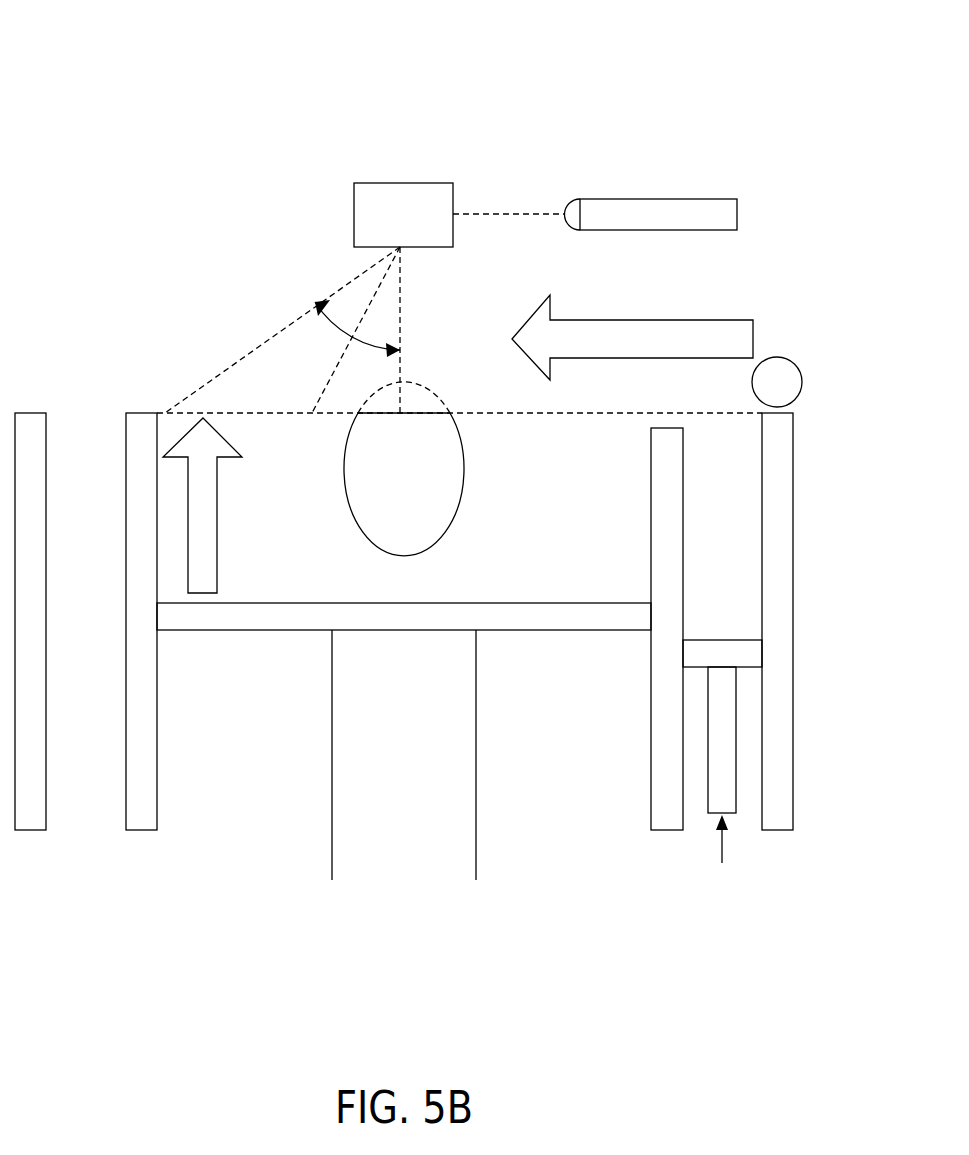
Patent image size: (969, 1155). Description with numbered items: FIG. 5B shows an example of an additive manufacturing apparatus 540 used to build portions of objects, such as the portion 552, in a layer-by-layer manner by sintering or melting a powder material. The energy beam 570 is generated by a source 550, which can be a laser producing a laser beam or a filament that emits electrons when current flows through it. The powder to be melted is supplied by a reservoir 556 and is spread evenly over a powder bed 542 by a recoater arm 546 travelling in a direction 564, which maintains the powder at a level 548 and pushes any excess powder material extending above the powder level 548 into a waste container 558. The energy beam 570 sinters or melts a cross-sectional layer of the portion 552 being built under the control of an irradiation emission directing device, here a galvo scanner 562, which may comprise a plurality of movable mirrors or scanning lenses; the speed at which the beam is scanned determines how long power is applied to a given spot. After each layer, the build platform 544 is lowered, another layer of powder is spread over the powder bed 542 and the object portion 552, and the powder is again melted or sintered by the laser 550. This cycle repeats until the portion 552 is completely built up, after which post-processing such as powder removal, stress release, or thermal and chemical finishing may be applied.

The apparatus 540 is at (80, 68).
The powder bed 542 is at (535, 432).
The build platform 544 is at (600, 603).
The recoater arm 546 is at (776, 357).
The powder level 548 is at (213, 408).
The source 550 is at (606, 199).
The portion 552 is at (345, 476).
The reservoir 556 is at (733, 519).
The waste container 558 is at (110, 720).
The galvo scanner 562 is at (354, 214).
The direction 564 is at (542, 316).
The energy beam 570 is at (357, 322).